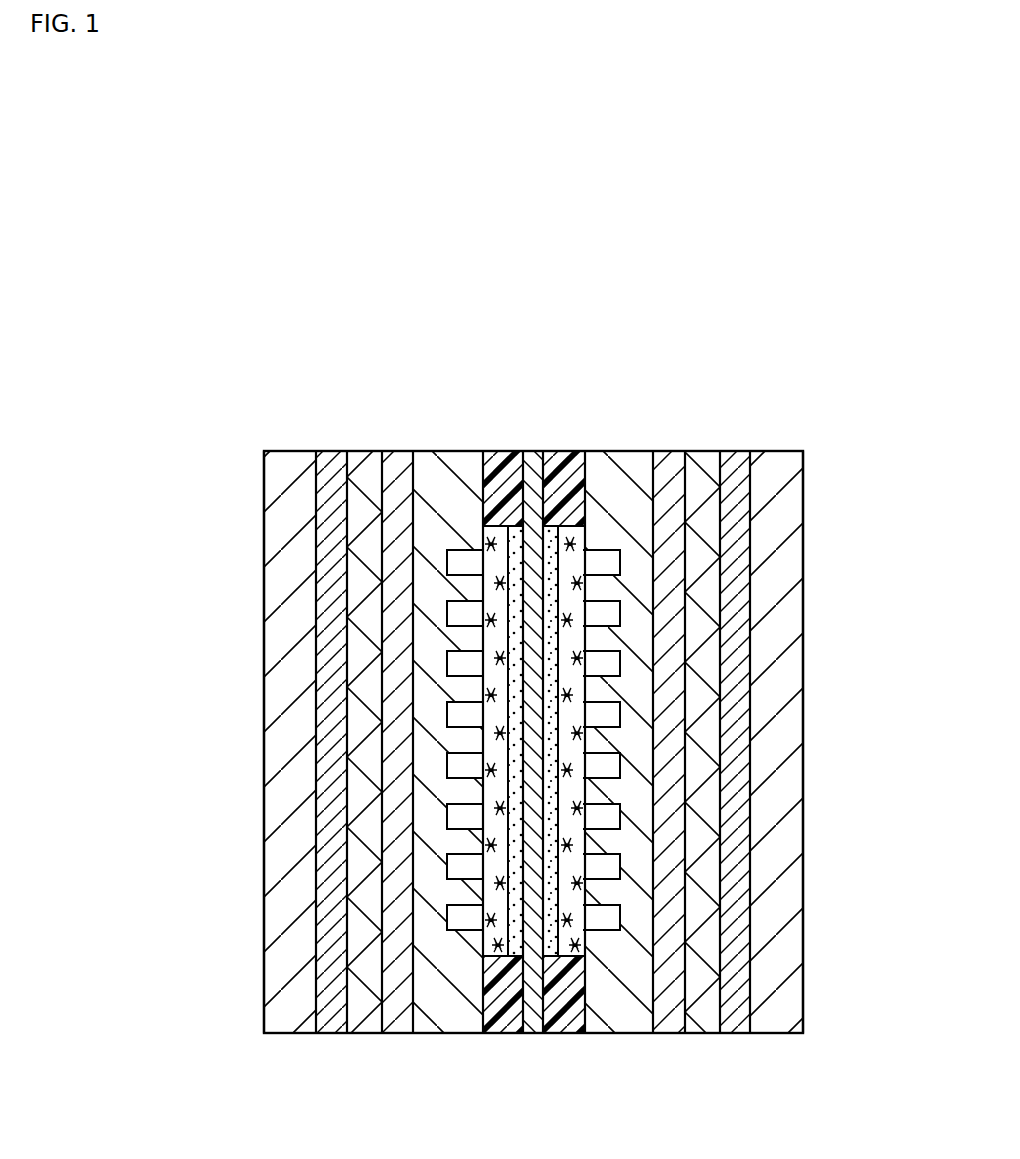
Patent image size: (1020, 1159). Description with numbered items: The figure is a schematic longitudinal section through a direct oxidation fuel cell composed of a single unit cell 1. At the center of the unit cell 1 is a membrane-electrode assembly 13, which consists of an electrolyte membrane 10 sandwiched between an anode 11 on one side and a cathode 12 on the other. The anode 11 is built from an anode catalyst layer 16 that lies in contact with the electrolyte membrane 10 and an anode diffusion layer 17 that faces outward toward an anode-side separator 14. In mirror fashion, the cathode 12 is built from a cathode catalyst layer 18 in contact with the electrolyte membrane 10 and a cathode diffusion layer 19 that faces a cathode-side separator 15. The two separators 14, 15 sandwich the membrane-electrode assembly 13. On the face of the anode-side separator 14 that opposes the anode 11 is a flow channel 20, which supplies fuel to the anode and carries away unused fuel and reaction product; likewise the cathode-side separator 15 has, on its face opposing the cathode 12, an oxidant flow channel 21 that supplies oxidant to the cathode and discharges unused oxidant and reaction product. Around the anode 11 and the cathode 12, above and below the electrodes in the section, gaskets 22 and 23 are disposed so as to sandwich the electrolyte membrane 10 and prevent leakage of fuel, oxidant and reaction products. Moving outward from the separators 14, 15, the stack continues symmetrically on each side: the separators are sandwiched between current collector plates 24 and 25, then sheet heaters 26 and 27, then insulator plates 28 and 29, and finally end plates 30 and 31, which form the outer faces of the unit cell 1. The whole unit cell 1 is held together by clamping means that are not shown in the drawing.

The unit cell 1 is at (713, 258).
The electrolyte membrane 10 is at (535, 470).
The anode 11 is at (478, 678).
The cathode 12 is at (596, 679).
The membrane-electrode assembly 13 is at (541, 647).
The anode-side separator 14 is at (411, 731).
The cathode-side separator 15 is at (646, 728).
The anode catalyst layer 16 is at (520, 508).
The anode diffusion layer 17 is at (483, 510).
The cathode catalyst layer 18 is at (562, 510).
The cathode diffusion layer 19 is at (583, 510).
The flow channel 20 is at (463, 922).
The oxidant flow channel 21 is at (603, 918).
The gasket 22 is at (502, 997).
The gasket 23 is at (562, 997).
The current collector plate 24 is at (393, 518).
The current collector plate 25 is at (670, 526).
The sheet heater 26 is at (365, 597).
The sheet heater 27 is at (700, 600).
The insulator plate 28 is at (332, 673).
The insulator plate 29 is at (737, 678).
The end plate 30 is at (292, 748).
The end plate 31 is at (775, 757).